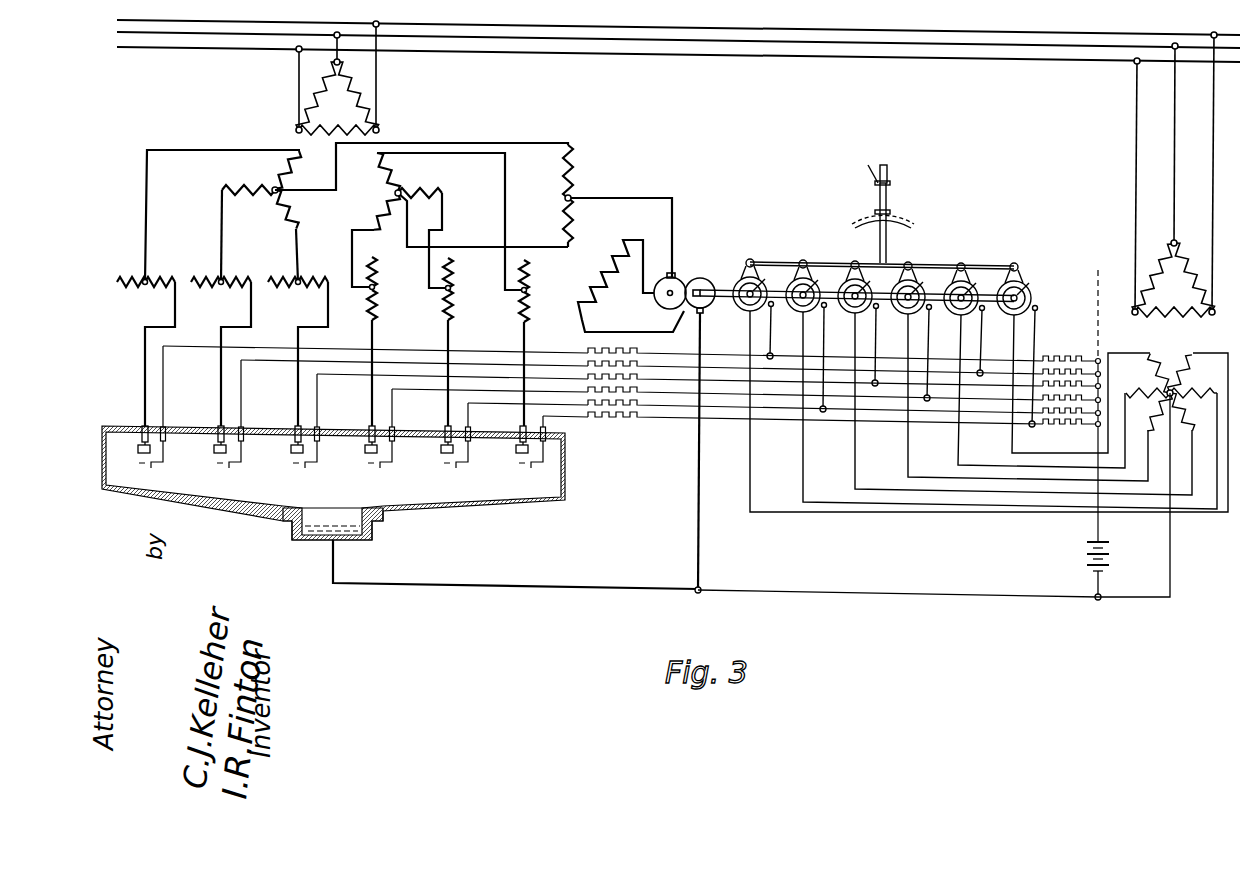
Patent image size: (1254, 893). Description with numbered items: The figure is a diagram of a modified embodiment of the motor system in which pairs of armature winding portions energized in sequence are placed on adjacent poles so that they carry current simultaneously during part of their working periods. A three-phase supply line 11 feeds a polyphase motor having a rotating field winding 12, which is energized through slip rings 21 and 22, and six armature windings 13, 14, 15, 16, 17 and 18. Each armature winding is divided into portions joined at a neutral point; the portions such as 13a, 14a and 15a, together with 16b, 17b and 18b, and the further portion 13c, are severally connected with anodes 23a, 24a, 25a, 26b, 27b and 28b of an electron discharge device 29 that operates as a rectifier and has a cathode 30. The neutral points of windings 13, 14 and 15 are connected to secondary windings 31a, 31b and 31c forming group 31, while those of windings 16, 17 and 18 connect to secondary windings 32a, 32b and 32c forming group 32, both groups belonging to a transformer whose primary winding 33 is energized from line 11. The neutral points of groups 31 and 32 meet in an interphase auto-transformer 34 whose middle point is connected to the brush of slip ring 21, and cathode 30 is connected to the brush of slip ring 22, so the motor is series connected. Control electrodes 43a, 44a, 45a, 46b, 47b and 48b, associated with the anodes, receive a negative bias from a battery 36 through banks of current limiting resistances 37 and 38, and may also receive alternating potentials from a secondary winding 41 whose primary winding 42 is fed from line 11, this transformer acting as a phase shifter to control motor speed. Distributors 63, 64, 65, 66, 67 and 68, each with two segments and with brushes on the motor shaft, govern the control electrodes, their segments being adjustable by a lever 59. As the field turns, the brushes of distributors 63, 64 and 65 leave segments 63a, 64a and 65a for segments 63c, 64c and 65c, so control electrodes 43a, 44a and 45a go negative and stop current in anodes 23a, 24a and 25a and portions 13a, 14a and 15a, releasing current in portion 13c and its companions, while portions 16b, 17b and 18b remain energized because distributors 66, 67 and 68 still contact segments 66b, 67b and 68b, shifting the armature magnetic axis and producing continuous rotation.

The polyphase alternating current supply line 11 is at (502, 25).
The field winding 12 is at (611, 299).
The armature winding 13 is at (142, 339).
The winding portion 13a is at (159, 278).
The winding portion 13c is at (127, 278).
The armature winding 14 is at (224, 339).
The winding portion 14a is at (232, 278).
The armature winding 15 is at (304, 339).
The winding portion 15a is at (314, 278).
The armature winding 16 is at (395, 341).
The winding portion 16b is at (380, 303).
The armature winding 17 is at (471, 342).
The winding portion 17b is at (456, 303).
The armature winding 18 is at (547, 343).
The winding portion 18b is at (533, 300).
The slip ring 21 is at (677, 276).
The slip ring 22 is at (711, 279).
The anode 23a is at (137, 453).
The anode 24a is at (213, 453).
The anode 25a is at (290, 453).
The anode 26b is at (364, 453).
The anode 27b is at (440, 453).
The anode 28b is at (515, 453).
The electron discharge device 29 is at (463, 506).
The cathode 30 is at (371, 535).
The secondary winding 31 is at (237, 215).
The secondary winding 31a is at (292, 177).
The secondary winding 31b is at (239, 197).
The secondary winding 31c is at (286, 214).
The secondary winding 32 is at (459, 220).
The secondary winding 32a is at (388, 170).
The secondary winding 32b is at (376, 220).
The secondary winding 32c is at (436, 186).
The primary winding 33 is at (346, 112).
The auto-transformer 34 is at (577, 169).
The battery 36 is at (1110, 556).
The bank of current limiting resistances 37 is at (1068, 453).
The bank of current limiting resistances 38 is at (632, 447).
The secondary winding 41 is at (1216, 383).
The primary winding 42 is at (1181, 301).
The control electrode 43a is at (363, 419).
The control electrode 44a is at (400, 426).
The control electrode 45a is at (436, 433).
The control electrode 46b is at (469, 440).
The control electrode 47b is at (506, 447).
The control electrode 48b is at (545, 454).
The lever 59 is at (890, 170).
The distributor 63 is at (976, 373).
The segment 63a is at (766, 270).
The segment 63c is at (749, 331).
The distributor 64 is at (997, 372).
The segment 64a is at (819, 271).
The segment 64c is at (802, 358).
The distributor 65 is at (1011, 365).
The segment 65a is at (871, 272).
The segment 65c is at (854, 345).
The distributor 66 is at (1015, 358).
The segment 66b is at (907, 353).
The distributor 67 is at (1030, 351).
The segment 67b is at (960, 341).
The distributor 68 is at (1069, 344).
The segment 68b is at (1013, 367).